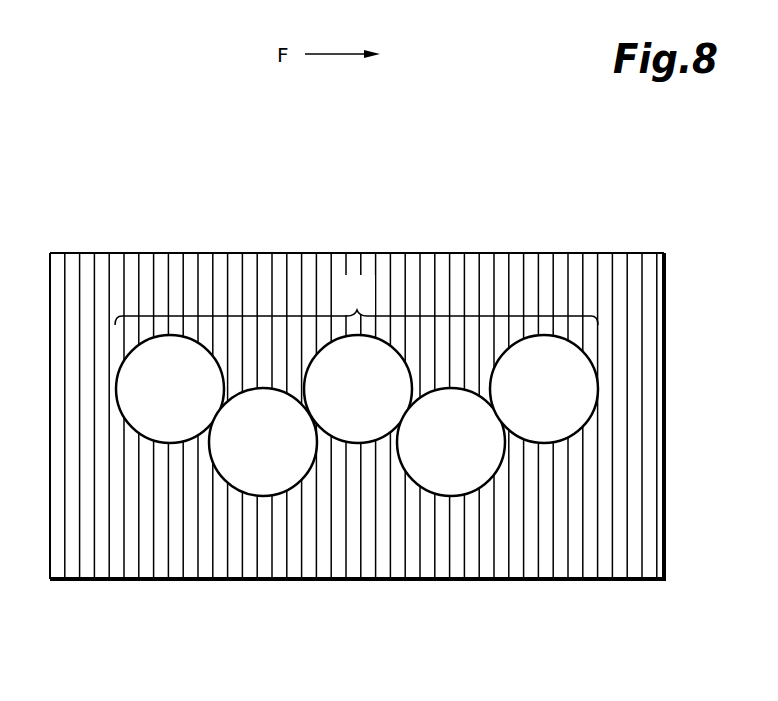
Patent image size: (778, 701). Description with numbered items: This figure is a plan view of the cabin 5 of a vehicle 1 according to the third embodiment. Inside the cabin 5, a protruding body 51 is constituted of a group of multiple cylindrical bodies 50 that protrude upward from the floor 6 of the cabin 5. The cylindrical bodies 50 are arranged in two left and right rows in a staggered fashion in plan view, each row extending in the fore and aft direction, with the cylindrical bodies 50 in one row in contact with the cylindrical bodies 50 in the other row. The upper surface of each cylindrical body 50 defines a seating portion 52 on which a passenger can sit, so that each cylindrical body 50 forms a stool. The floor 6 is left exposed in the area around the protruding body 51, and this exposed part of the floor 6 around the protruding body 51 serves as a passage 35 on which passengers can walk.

The substrate 1 is at (579, 248).
The cabin 5 is at (491, 280).
The floor 6 is at (538, 516).
The passage 35 is at (401, 558).
The cylindrical body 50 is at (431, 499).
The protruding body 51 is at (356, 300).
The seating portion 52 is at (562, 400).